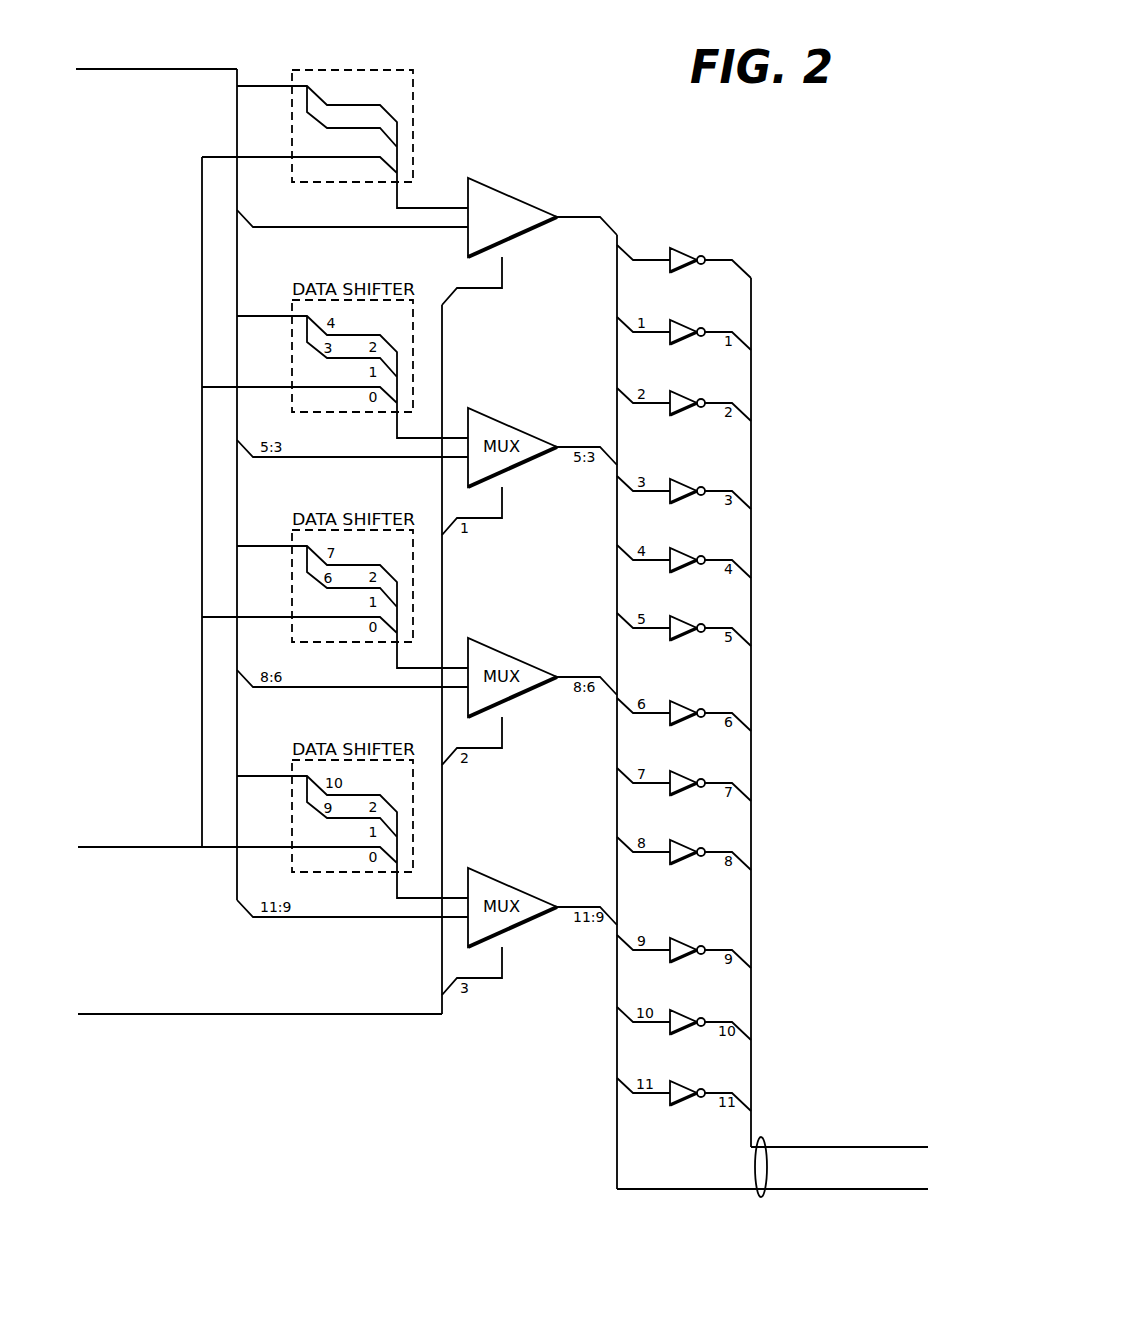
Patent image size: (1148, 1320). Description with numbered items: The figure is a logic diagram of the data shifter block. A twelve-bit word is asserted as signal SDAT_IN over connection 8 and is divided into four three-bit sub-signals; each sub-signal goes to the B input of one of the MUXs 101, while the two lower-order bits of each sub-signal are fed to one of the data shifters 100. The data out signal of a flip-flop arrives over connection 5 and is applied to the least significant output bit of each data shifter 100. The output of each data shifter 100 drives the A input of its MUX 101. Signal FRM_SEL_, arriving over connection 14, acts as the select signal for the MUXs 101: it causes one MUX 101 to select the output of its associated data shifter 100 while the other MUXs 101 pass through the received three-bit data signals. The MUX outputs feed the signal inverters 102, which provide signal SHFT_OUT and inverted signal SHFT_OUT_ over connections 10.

The data shifter 100 is at (352, 38).
The MUX 101 is at (502, 179).
The signal inverter 102 is at (687, 240).
The connection 8 is at (103, 69).
The connection 5 is at (105, 847).
The connection 14 is at (105, 1014).
The connection 10 is at (755, 1165).